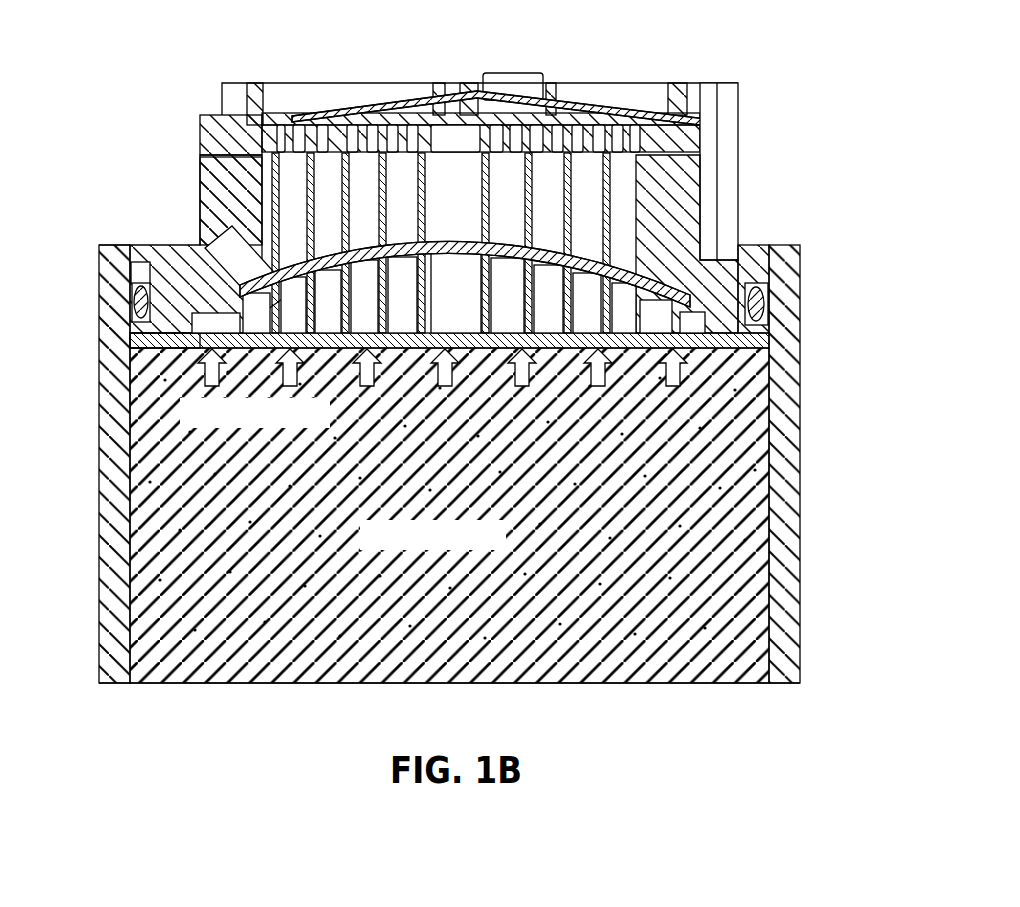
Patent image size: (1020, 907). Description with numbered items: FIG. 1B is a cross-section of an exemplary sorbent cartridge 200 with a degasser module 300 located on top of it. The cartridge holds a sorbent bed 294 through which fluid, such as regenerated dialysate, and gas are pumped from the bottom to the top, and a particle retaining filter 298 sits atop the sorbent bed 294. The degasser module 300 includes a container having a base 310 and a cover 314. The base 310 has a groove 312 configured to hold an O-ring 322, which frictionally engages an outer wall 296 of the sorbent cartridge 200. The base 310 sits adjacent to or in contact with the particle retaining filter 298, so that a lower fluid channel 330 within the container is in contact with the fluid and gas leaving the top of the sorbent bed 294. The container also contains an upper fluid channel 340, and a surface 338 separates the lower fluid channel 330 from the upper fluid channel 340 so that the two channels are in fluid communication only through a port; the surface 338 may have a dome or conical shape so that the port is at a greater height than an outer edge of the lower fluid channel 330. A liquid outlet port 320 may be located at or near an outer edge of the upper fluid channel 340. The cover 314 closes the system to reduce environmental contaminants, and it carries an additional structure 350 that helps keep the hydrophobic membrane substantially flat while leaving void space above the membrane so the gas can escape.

The sorbent cartridge 200 is at (469, 491).
The sorbent bed 294 is at (547, 610).
The outer wall 296 is at (787, 540).
The particle retaining filter 298 is at (769, 341).
The degasser module 300 is at (441, 175).
The base 310 is at (752, 283).
The groove 312 is at (134, 336).
The cover 314 is at (730, 114).
The liquid outlet port 320 is at (228, 262).
The O-ring 322 is at (137, 296).
The lower fluid channel 330 is at (616, 297).
The surface 338 is at (367, 247).
The upper fluid channel 340 is at (293, 206).
The additional structure 350 is at (276, 137).